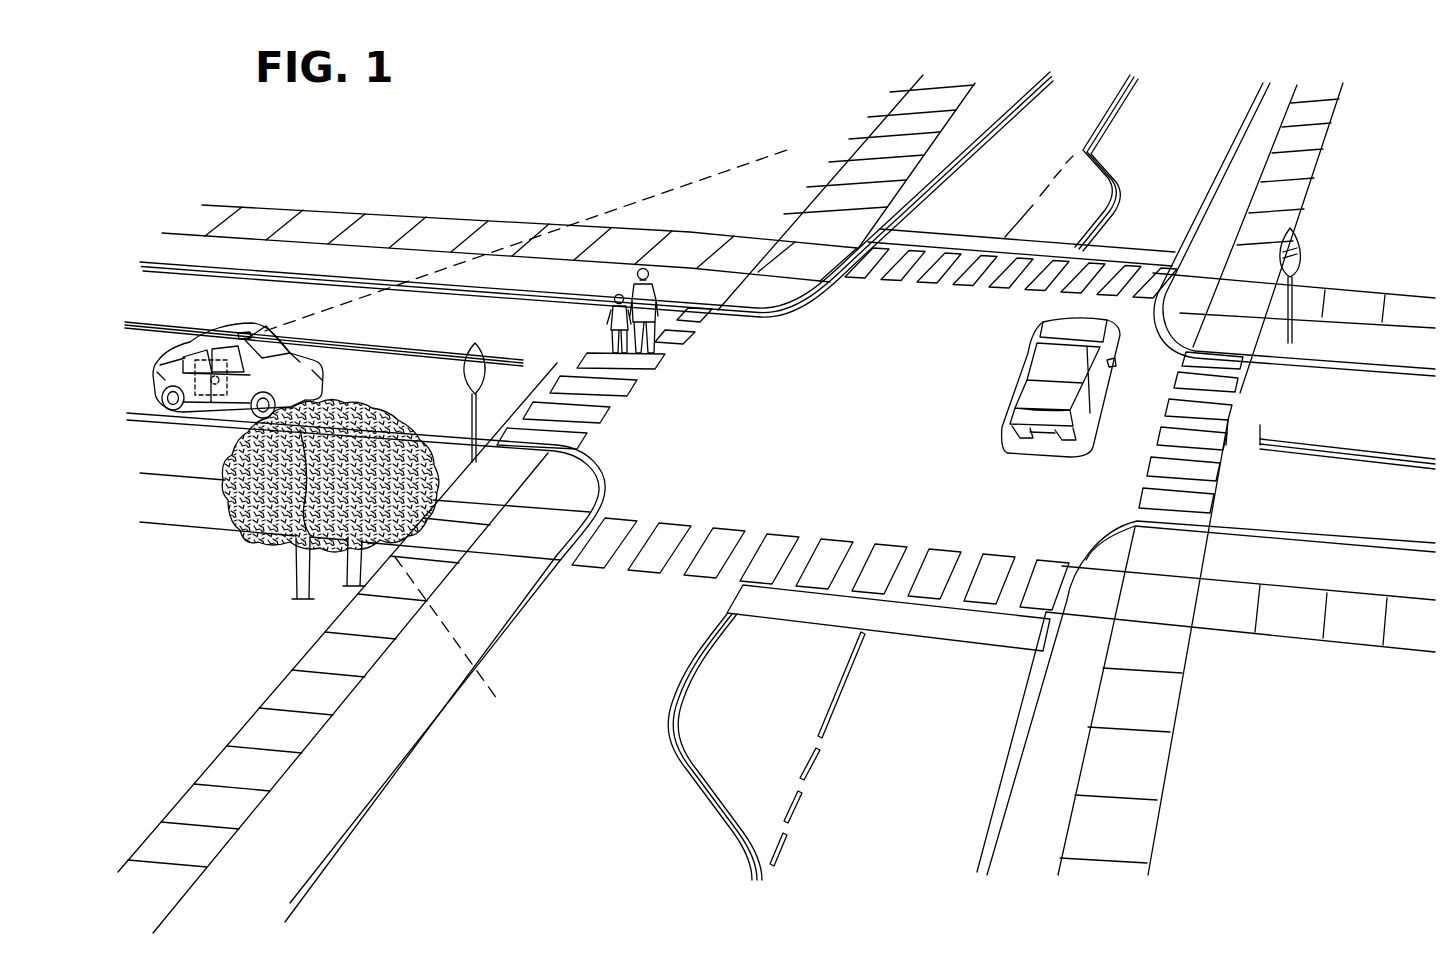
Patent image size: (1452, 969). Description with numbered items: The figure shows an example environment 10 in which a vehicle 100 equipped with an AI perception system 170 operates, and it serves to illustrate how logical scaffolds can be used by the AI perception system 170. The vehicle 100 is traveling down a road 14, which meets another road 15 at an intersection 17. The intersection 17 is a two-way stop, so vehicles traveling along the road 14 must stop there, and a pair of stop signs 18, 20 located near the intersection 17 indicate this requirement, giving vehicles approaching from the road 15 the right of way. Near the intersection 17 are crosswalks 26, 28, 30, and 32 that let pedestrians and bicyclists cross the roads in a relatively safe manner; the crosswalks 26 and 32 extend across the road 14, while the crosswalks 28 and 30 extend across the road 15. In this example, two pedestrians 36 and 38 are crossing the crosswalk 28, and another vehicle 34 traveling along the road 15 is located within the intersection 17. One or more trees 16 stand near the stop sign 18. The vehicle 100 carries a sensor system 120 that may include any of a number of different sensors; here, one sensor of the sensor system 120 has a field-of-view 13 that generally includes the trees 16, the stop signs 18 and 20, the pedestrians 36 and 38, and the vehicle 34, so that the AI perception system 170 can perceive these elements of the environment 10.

The environment 10 is at (748, 130).
The field-of-view 13 is at (653, 195).
The road 14 is at (300, 295).
The road 15 is at (1153, 103).
The trees 16 is at (378, 568).
The intersection 17 is at (931, 431).
The stop sign 18 is at (462, 376).
The stop sign 20 is at (1300, 253).
The crosswalk 26 is at (593, 344).
The crosswalk 28 is at (1117, 260).
The crosswalk 30 is at (972, 688).
The crosswalk 32 is at (1218, 493).
The vehicle 34 is at (1057, 367).
The pedestrian 36 is at (657, 328).
The pedestrian 38 is at (607, 308).
The vehicle 100 is at (197, 407).
The sensor system 120 is at (242, 330).
The AI perception system 170 is at (220, 413).